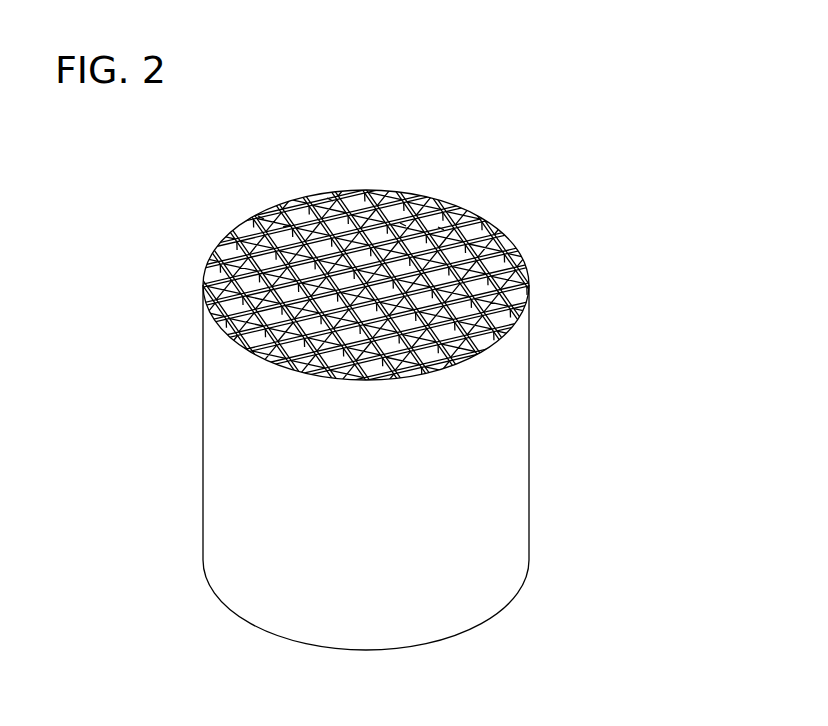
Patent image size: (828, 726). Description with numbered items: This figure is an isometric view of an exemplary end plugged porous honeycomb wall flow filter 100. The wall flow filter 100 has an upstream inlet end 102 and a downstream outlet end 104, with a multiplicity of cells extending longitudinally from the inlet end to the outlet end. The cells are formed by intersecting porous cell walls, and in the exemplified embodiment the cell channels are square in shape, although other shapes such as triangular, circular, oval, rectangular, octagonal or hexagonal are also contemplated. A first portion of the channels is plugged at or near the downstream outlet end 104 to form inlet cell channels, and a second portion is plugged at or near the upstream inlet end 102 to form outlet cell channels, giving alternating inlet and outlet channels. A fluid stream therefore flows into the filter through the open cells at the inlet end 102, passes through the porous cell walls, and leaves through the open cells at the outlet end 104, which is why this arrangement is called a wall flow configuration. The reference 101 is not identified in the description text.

The wall flow filter 100 is at (530, 178).
The end face 101 is at (220, 288).
The upstream inlet end 102 is at (522, 250).
The downstream outlet end 104 is at (447, 637).